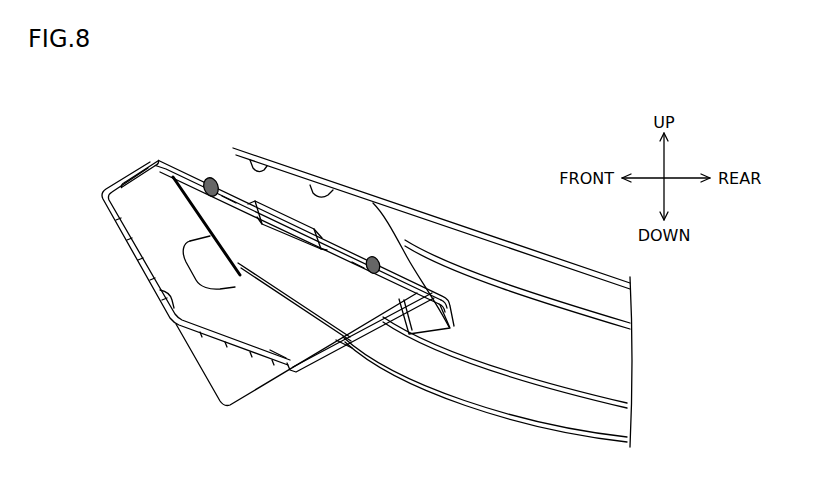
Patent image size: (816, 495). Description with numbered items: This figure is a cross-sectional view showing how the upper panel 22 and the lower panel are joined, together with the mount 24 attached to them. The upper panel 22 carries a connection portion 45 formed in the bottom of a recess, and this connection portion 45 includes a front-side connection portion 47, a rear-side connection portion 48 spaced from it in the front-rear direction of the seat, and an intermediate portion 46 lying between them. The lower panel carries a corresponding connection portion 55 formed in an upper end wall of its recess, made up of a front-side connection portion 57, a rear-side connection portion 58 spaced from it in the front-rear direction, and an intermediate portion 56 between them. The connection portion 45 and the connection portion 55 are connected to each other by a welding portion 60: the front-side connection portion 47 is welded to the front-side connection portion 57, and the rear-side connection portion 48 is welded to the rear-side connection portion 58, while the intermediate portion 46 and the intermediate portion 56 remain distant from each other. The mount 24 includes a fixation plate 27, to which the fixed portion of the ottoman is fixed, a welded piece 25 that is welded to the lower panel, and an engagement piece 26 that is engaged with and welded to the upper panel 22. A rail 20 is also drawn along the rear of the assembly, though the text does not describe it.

The roof side rail 20 is at (505, 243).
The upper panel 22 is at (407, 240).
The mount 24 is at (101, 146).
The welded piece 25 is at (377, 330).
The engagement piece 26 is at (132, 160).
The fixation plate 27 is at (143, 279).
The connection portion 45 is at (223, 92).
The intermediate portion 46 is at (310, 181).
The front-side connection portion 47 is at (230, 262).
The rear-side connection portion 48 is at (346, 258).
The connection portion 55 is at (213, 447).
The intermediate portion 56 is at (277, 233).
The front-side connection portion 57 is at (230, 262).
The rear-side connection portion 58 is at (346, 258).
The welding portion 60 is at (205, 178).